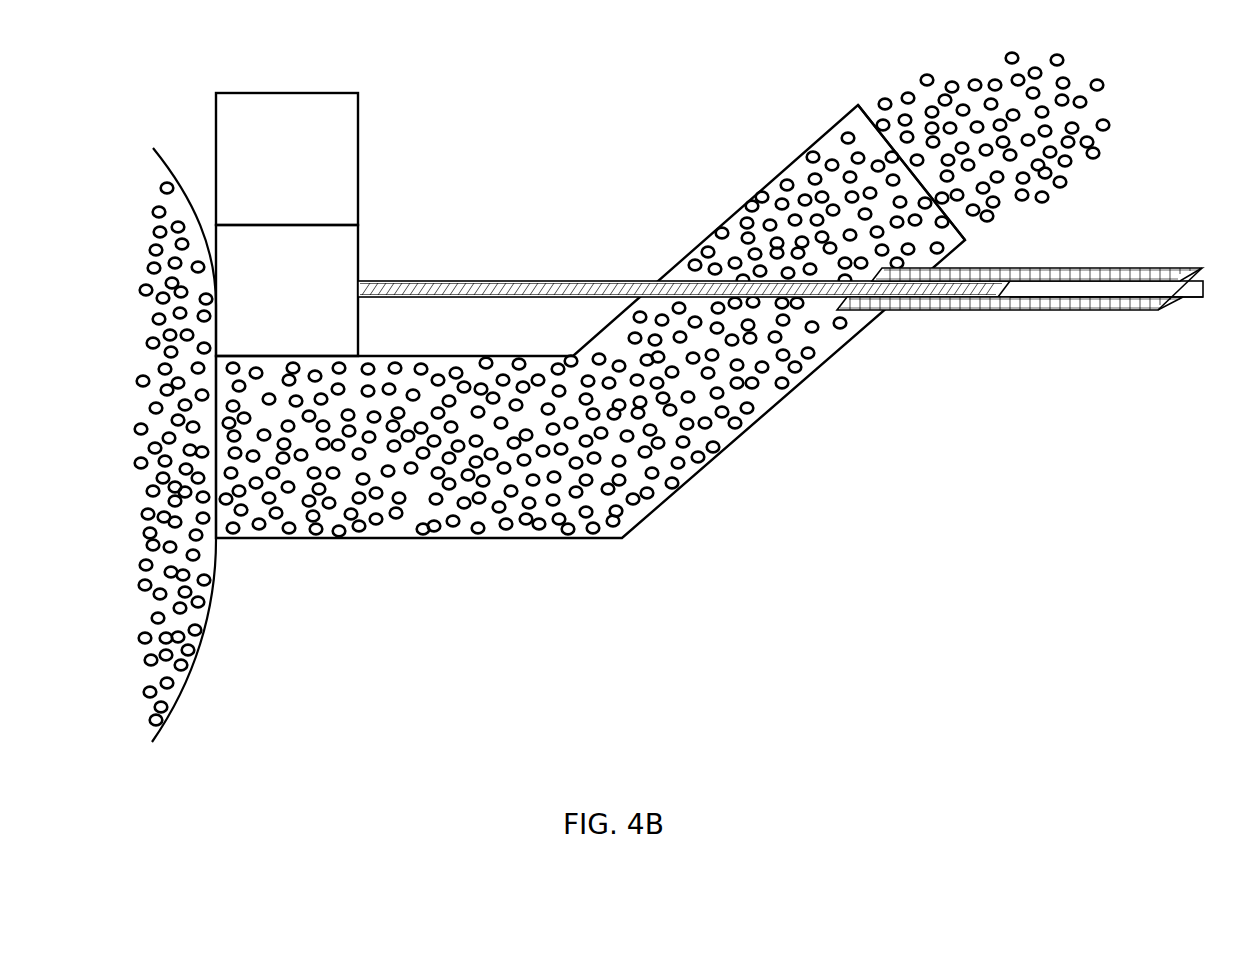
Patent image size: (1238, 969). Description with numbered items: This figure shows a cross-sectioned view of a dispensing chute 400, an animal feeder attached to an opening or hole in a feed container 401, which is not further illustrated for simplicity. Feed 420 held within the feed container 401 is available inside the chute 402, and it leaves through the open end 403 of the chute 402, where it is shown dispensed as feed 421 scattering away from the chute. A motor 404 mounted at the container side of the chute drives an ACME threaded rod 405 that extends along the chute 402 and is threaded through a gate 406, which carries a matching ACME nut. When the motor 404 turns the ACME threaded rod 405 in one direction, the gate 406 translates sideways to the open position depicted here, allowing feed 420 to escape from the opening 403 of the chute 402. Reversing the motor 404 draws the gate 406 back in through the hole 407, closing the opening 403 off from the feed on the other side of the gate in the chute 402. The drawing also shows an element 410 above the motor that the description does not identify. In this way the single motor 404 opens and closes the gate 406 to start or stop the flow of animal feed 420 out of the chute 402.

The dispensing chute 400 is at (537, 103).
The feed container 401 is at (191, 669).
The chute 402 is at (667, 508).
The open end 403 is at (928, 178).
The motor 404 is at (338, 268).
The ACME threaded rod 405 is at (487, 282).
The gate 406 is at (1015, 313).
The hole 407 is at (889, 307).
The reservoir 410 is at (335, 165).
The feed 420 is at (418, 483).
The feed 421 is at (785, 228).